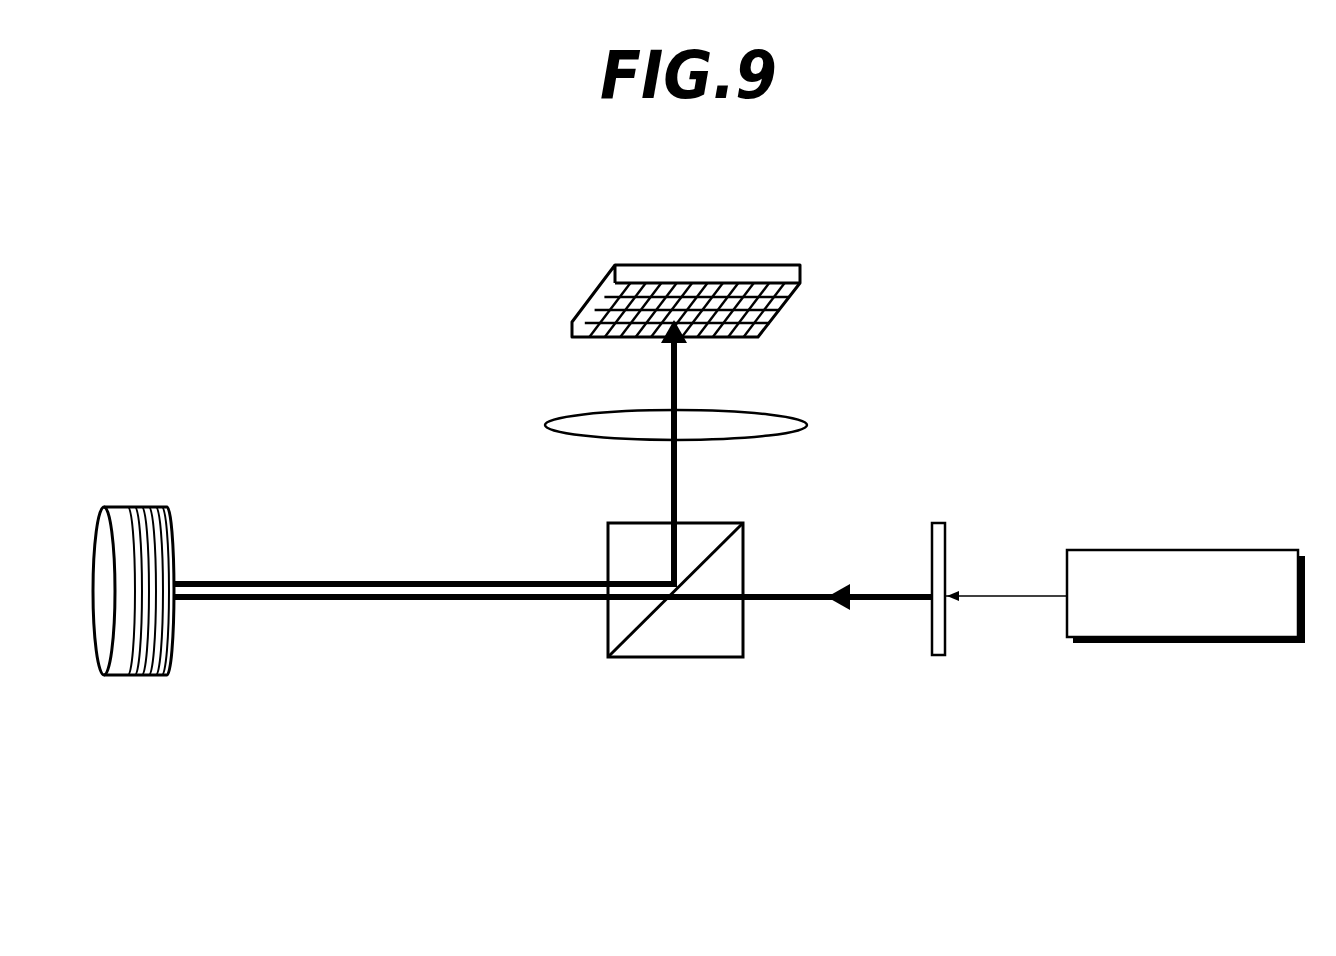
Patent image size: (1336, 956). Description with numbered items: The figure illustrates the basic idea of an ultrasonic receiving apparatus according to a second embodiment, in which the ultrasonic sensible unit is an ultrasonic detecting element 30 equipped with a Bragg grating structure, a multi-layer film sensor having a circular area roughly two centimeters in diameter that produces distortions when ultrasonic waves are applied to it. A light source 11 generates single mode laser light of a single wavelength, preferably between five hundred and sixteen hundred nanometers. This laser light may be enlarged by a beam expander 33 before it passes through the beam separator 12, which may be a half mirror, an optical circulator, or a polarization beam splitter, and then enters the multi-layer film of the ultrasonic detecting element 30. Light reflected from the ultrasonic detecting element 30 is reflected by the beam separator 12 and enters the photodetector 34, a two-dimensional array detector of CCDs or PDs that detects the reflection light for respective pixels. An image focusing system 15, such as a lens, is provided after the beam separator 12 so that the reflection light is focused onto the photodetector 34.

The photodetector 34 is at (800, 276).
The image focusing system 15 is at (807, 425).
The beam separator 12 is at (637, 657).
The ultrasonic detecting element 30 is at (152, 675).
The beam expander 33 is at (938, 655).
The light source 11 is at (1088, 643).